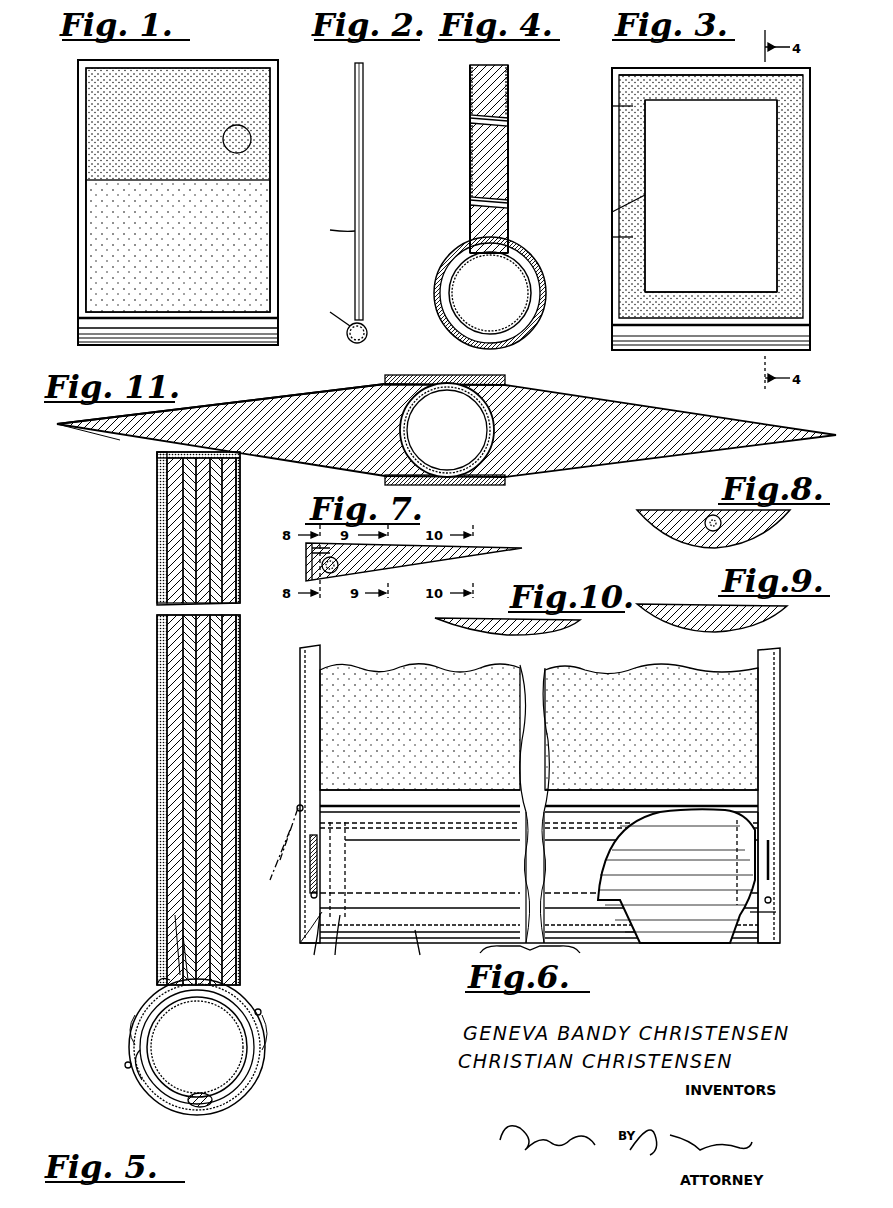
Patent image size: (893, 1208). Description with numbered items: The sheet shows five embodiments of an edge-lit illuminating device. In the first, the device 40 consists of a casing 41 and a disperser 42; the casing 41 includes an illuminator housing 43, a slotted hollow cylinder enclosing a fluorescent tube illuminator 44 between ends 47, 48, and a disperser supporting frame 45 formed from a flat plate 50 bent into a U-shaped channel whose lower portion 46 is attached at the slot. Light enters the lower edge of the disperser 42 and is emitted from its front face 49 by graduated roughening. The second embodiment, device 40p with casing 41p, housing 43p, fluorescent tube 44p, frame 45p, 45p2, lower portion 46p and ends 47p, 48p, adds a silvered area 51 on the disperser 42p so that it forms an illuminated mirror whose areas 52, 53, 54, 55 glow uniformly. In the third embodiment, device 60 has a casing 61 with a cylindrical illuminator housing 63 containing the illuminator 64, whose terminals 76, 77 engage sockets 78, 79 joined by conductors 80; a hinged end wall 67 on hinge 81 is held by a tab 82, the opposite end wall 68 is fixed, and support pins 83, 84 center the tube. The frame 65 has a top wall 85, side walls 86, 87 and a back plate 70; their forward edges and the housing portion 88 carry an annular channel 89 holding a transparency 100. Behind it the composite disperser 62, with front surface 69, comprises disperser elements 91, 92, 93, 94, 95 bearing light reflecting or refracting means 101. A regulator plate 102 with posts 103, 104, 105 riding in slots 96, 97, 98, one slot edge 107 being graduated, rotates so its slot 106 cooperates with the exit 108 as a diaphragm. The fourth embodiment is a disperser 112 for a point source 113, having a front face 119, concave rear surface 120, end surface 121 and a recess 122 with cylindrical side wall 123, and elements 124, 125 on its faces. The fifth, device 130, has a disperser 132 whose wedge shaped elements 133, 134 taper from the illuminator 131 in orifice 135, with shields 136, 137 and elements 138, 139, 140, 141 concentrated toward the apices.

In FIG. 1, the device 40 is at (278, 82).
In FIG. 2, the device 40 is at (330, 50).
In FIG. 1, the casing 41 is at (250, 350).
In FIG. 1, the disperser 42 is at (230, 193).
In FIG. 1, the illuminator housing 43 is at (185, 335).
In FIG. 2, the illuminator housing 43 is at (368, 334).
In FIG. 1, the illuminator 44 is at (327, 357).
In FIG. 1, the disperser supporting frame 45 is at (278, 240).
In FIG. 2, the disperser supporting frame 45 is at (342, 230).
In FIG. 1, the lower portion 46 is at (190, 312).
In FIG. 1, the end 47 is at (78, 333).
In FIG. 1, the end 48 is at (278, 330).
In FIG. 1, the front face 49 is at (125, 253).
In FIG. 1, the flat plate 50 is at (237, 140).
In FIG. 2, the flat plate 50 is at (364, 147).
In FIG. 4, the silvered area 51 is at (470, 170).
In FIG. 3, the silvered area 51 is at (628, 203).
In FIG. 3, the area 52 is at (685, 310).
In FIG. 3, the area 53 is at (722, 80).
In FIG. 3, the area 54 is at (635, 175).
In FIG. 3, the area 55 is at (786, 174).
In FIG. 4, the device 40p is at (514, 70).
In FIG. 3, the device 40p is at (711, 209).
In FIG. 4, the casing 41p is at (612, 238).
In FIG. 4, the disperser 42p is at (508, 176).
In FIG. 3, the disperser 42p is at (790, 228).
In FIG. 4, the illuminator housing 43p is at (546, 305).
In FIG. 3, the illuminator housing 43p is at (708, 340).
In FIG. 4, the fluorescent tube 44p is at (520, 288).
In FIG. 4, the disperser supporting frame 45p is at (508, 100).
In FIG. 3, the disperser supporting frame 45p is at (622, 171).
In FIG. 4, the disperser supporting frame 45p2 is at (612, 326).
In FIG. 3, the lower portion 46p is at (705, 318).
In FIG. 4, the end 47p is at (612, 348).
In FIG. 3, the end 48p is at (810, 343).
In FIG. 5, the device 60 is at (156, 751).
In FIG. 5, the casing 61 is at (240, 752).
In FIG. 5, the disperser 62 is at (185, 566).
In FIG. 5, the illuminator housing 63 is at (266, 1075).
In FIG. 6, the illuminator housing 63 is at (390, 875).
In FIG. 5, the illuminator 64 is at (232, 1012).
In FIG. 6, the illuminator 64 is at (672, 915).
In FIG. 5, the disperser supporting frame 65 is at (240, 666).
In FIG. 6, the end wall 67 is at (300, 882).
In FIG. 6, the end wall 68 is at (780, 877).
In FIG. 5, the front surface 69 is at (175, 535).
In FIG. 6, the front surface 69 is at (730, 735).
In FIG. 5, the back plate 70 is at (240, 693).
In FIG. 6, the terminal 76 is at (338, 949).
In FIG. 6, the terminal 77 is at (740, 915).
In FIG. 6, the socket 78 is at (310, 948).
In FIG. 6, the socket 79 is at (778, 935).
In FIG. 5, the conductors 80 is at (200, 1110).
In FIG. 6, the conductors 80 is at (540, 954).
In FIG. 6, the hinge 81 is at (298, 805).
In FIG. 6, the tab 82 is at (300, 940).
In FIG. 6, the support pin 83 is at (310, 915).
In FIG. 6, the support pin 84 is at (766, 913).
In FIG. 5, the top wall 85 is at (180, 452).
In FIG. 6, the side wall 86 is at (300, 710).
In FIG. 6, the side wall 87 is at (780, 705).
In FIG. 5, the portion 88 is at (158, 992).
In FIG. 5, the annular peripheral channel 89 is at (157, 466).
In FIG. 6, the annular peripheral channel 89 is at (320, 700).
In FIG. 5, the disperser element 91 is at (180, 785).
In FIG. 5, the disperser element 92 is at (190, 808).
In FIG. 5, the disperser element 93 is at (205, 833).
In FIG. 5, the disperser element 94 is at (215, 851).
In FIG. 5, the disperser element 95 is at (228, 876).
In FIG. 5, the slot 96 is at (122, 1030).
In FIG. 6, the slot 96 is at (312, 895).
In FIG. 5, the slot 97 is at (275, 1036).
In FIG. 6, the slot 98 is at (770, 862).
In FIG. 5, the transparency 100 is at (165, 703).
In FIG. 5, the light reflecting or refracting means 101 is at (225, 690).
In FIG. 6, the light reflecting or refracting means 101 is at (415, 715).
In FIG. 5, the illumination intensity regulator plate 102 is at (148, 1080).
In FIG. 6, the illumination intensity regulator plate 102 is at (655, 872).
In FIG. 5, the post 103 is at (126, 1066).
In FIG. 6, the post 103 is at (316, 893).
In FIG. 5, the post 104 is at (262, 1012).
In FIG. 6, the post 105 is at (771, 899).
In FIG. 5, the slot 106 is at (175, 942).
In FIG. 6, the slot 106 is at (405, 822).
In FIG. 6, the slot edge 107 is at (320, 865).
In FIG. 5, the exit 108 is at (168, 928).
In FIG. 7, the disperser 112 is at (525, 550).
In FIG. 10, the disperser 112 is at (560, 632).
In FIG. 8, the disperser 112 is at (778, 520).
In FIG. 9, the disperser 112 is at (754, 620).
In FIG. 7, the point source of light 113 is at (322, 565).
In FIG. 7, the front face 119 is at (480, 545).
In FIG. 10, the front face 119 is at (505, 607).
In FIG. 8, the front face 119 is at (697, 510).
In FIG. 9, the front face 119 is at (697, 605).
In FIG. 7, the rear surface 120 is at (413, 576).
In FIG. 8, the rear surface 120 is at (680, 536).
In FIG. 9, the rear surface 120 is at (690, 629).
In FIG. 7, the end surface 121 is at (306, 552).
In FIG. 7, the recess 122 is at (335, 582).
In FIG. 8, the recess 122 is at (717, 515).
In FIG. 7, the cylindrical side wall 123 is at (306, 585).
In FIG. 8, the cylindrical side wall 123 is at (710, 530).
In FIG. 7, the light reflecting or refracting elements 124 is at (520, 545).
In FIG. 10, the light reflecting or refracting elements 124 is at (578, 619).
In FIG. 8, the light reflecting or refracting elements 124 is at (672, 510).
In FIG. 9, the light reflecting or refracting elements 124 is at (770, 606).
In FIG. 7, the light reflecting or refracting elements 125 is at (345, 582).
In FIG. 10, the light reflecting or refracting elements 125 is at (505, 635).
In FIG. 8, the light reflecting or refracting elements 125 is at (755, 534).
In FIG. 9, the light reflecting or refracting elements 125 is at (720, 633).
In FIG. 11, the device 130 is at (370, 384).
In FIG. 11, the illuminator 131 is at (412, 430).
In FIG. 11, the disperser 132 is at (642, 396).
In FIG. 11, the dispersing element 133 is at (315, 445).
In FIG. 11, the dispersing element 134 is at (585, 445).
In FIG. 11, the cylindrical orifice 135 is at (370, 467).
In FIG. 11, the shield 136 is at (528, 368).
In FIG. 11, the shield 137 is at (510, 480).
In FIG. 11, the light reflecting and refracting elements 138 is at (200, 410).
In FIG. 11, the light reflecting and refracting elements 139 is at (95, 432).
In FIG. 11, the light reflecting and refracting elements 140 is at (770, 420).
In FIG. 11, the light reflecting and refracting elements 141 is at (765, 446).